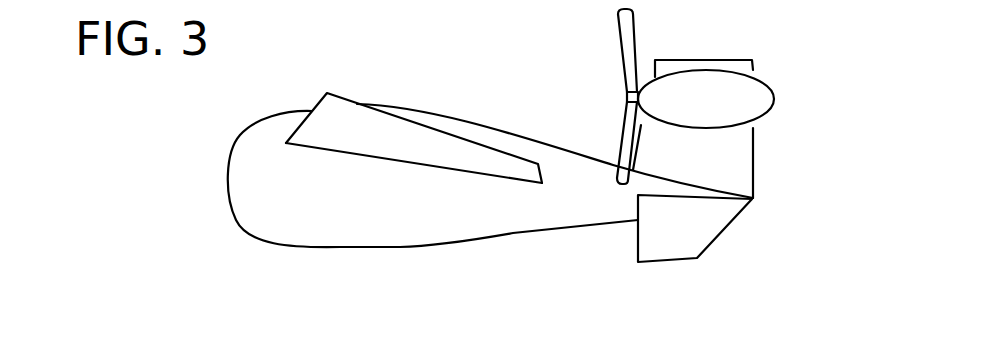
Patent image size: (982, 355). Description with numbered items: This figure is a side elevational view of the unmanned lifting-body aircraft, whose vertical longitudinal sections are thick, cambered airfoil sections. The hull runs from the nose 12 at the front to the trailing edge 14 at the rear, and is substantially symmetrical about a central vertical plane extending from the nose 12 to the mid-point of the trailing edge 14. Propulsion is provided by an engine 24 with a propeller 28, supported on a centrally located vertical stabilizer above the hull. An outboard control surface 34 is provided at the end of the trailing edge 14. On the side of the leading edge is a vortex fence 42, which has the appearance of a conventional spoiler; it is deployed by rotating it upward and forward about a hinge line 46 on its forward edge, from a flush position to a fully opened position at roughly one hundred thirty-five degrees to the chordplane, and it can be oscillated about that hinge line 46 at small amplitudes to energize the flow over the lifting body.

The nose 12 is at (225, 180).
The trailing edge 14 is at (755, 200).
The vortex fence 42 is at (357, 118).
The hinge line 46 is at (370, 157).
The propeller 28 is at (622, 52).
The engine 24 is at (758, 91).
The outboard control surface 34 is at (693, 237).